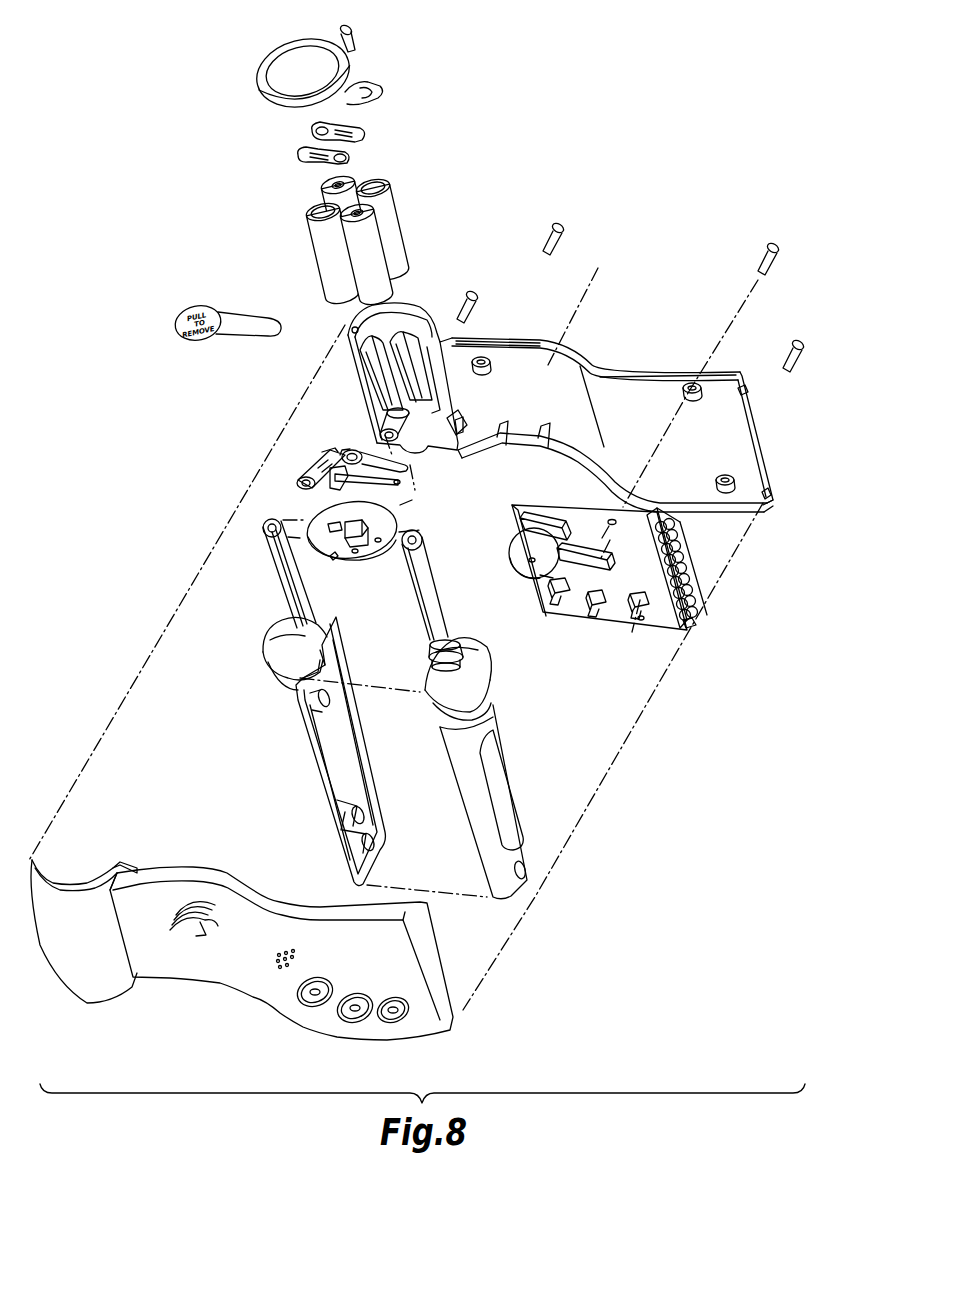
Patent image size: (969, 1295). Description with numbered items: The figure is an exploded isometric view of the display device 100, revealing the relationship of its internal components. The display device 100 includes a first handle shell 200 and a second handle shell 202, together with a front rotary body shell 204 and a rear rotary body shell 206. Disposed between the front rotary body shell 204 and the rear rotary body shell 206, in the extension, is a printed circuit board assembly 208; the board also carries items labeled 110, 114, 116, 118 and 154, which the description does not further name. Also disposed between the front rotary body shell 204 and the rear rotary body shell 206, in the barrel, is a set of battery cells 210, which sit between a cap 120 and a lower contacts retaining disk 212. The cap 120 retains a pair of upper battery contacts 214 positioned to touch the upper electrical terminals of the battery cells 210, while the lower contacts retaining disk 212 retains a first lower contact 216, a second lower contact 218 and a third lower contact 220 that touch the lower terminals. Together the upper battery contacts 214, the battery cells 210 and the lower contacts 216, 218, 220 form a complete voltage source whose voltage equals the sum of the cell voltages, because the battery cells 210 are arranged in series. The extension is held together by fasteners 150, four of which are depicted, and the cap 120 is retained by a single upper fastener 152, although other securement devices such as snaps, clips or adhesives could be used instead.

The display device 100 is at (562, 98).
The LED light bar 110 is at (692, 562).
The message button switch 114 is at (552, 598).
The sound button switch 116 is at (586, 606).
The on/forward-reverse switch 118 is at (631, 609).
The cap 120 is at (303, 62).
The fasteners 150 is at (470, 292).
The upper fastener 152 is at (355, 38).
The LED light 154 is at (696, 614).
The first handle shell 200 is at (310, 768).
The second handle shell 202 is at (500, 768).
The front rotary body shell 204 is at (222, 965).
The rear rotary body shell 206 is at (632, 368).
The printed circuit board assembly 208 is at (587, 581).
The battery cells 210 is at (392, 220).
The lower contacts retaining disk 212 is at (392, 520).
The upper battery contacts 214 is at (368, 136).
The first lower contact 216 is at (310, 460).
The second lower contact 218 is at (352, 450).
The third lower contact 220 is at (402, 482).